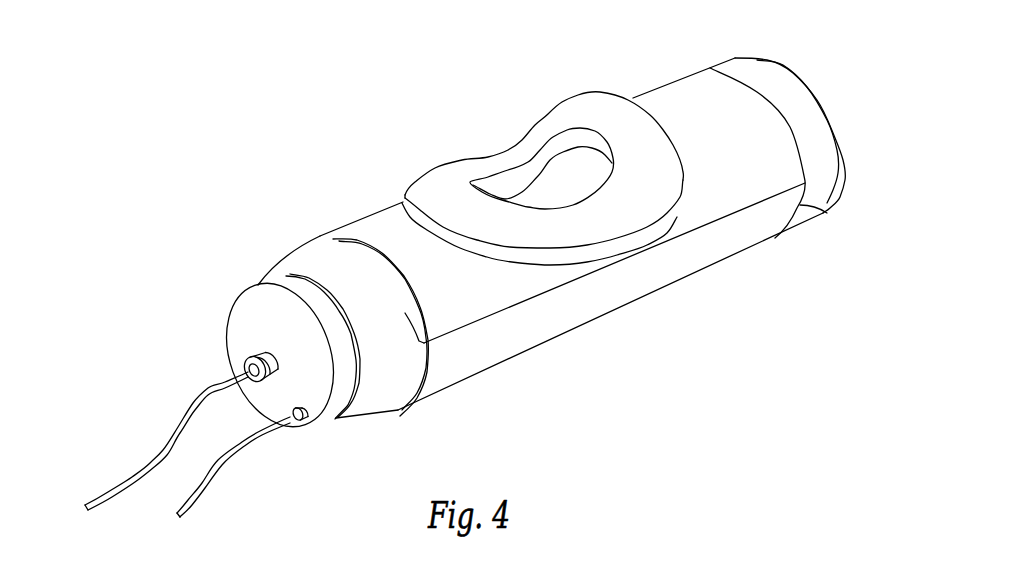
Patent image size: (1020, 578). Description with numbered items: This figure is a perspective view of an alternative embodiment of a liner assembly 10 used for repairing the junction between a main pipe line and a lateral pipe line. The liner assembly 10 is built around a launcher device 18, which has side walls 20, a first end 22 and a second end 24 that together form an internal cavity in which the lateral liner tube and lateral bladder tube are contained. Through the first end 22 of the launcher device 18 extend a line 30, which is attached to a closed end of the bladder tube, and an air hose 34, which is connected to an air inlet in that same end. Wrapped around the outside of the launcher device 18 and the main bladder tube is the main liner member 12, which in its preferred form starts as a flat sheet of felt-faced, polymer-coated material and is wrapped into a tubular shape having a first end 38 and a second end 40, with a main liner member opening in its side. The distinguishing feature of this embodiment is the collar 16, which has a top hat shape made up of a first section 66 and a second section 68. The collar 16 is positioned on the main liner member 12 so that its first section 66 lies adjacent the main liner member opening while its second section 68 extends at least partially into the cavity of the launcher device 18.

The liner assembly 10 is at (294, 237).
The main liner member 12 is at (552, 327).
The collar 16 is at (522, 150).
The launcher device 18 is at (251, 281).
The side walls 20 is at (307, 257).
The first end 22 is at (237, 337).
The second end 24 is at (826, 109).
The line 30 is at (137, 470).
The air hose 34 is at (203, 485).
The first end 38 is at (395, 407).
The second end 40 is at (824, 212).
The first section 66 is at (458, 178).
The second section 68 is at (541, 161).